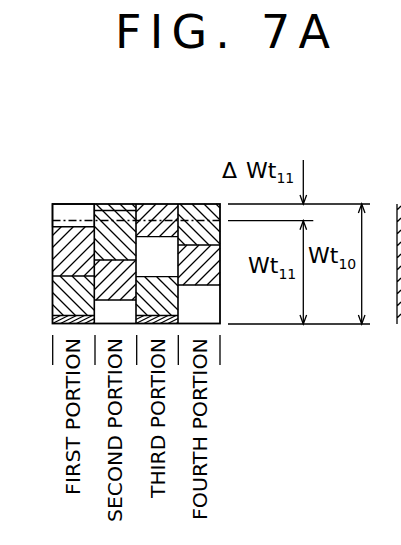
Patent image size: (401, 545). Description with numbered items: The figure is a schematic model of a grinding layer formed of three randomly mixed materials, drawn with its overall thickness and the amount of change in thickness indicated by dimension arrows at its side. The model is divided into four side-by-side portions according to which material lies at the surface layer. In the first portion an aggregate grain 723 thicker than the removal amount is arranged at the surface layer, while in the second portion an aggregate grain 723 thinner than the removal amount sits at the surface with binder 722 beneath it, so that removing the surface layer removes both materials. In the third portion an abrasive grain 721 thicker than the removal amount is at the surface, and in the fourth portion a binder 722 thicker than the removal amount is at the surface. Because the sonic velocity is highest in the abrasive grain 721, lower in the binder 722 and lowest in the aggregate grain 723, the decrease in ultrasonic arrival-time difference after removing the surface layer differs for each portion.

The abrasive grain 721 is at (154, 228).
The binder 722 is at (120, 213).
The aggregate grain 723 is at (103, 212).